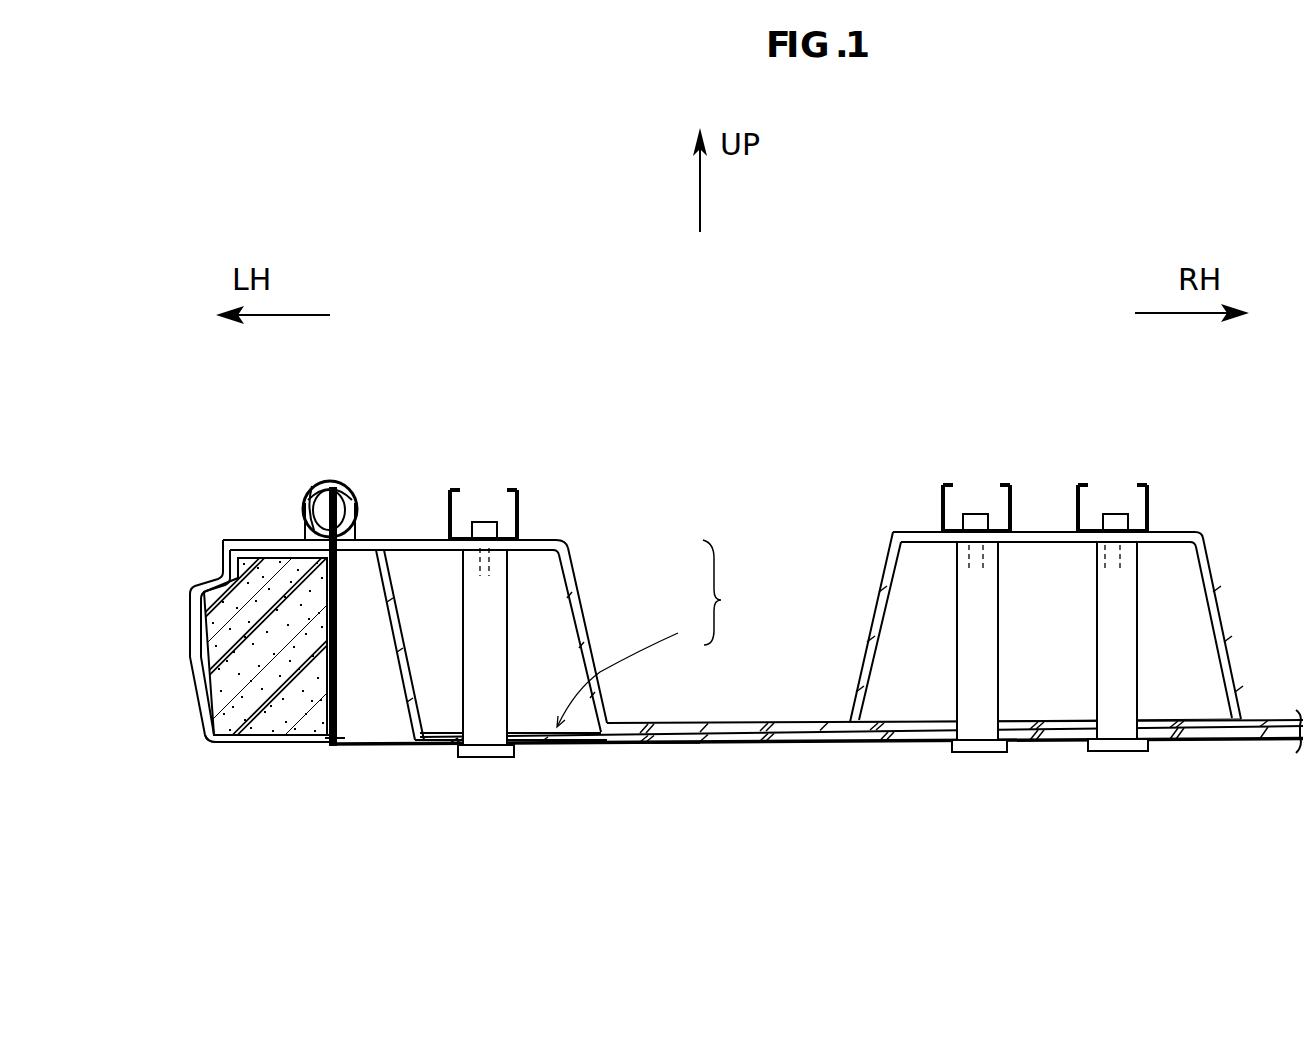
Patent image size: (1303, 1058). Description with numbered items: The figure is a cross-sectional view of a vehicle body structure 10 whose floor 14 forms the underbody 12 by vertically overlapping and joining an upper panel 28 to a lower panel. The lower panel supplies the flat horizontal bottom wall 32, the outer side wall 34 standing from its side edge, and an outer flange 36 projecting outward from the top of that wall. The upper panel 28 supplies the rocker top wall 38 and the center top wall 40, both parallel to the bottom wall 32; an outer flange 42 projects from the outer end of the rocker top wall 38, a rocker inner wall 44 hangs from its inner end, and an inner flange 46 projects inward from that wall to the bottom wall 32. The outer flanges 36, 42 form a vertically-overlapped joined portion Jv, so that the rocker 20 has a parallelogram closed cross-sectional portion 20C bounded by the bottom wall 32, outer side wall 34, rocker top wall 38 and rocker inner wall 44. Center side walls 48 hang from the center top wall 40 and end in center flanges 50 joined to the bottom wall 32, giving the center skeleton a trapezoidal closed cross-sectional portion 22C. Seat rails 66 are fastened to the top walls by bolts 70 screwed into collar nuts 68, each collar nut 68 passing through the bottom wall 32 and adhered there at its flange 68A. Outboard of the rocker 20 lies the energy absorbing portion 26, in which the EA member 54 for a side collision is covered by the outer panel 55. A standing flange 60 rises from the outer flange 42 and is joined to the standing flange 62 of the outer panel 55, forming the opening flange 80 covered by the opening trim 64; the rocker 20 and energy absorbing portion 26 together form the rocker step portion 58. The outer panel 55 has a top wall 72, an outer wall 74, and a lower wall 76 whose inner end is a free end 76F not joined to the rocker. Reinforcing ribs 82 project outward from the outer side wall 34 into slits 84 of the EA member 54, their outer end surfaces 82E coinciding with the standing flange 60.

The vehicle body structure 10 is at (823, 420).
The underbody 12 is at (682, 633).
The floor 14 is at (682, 633).
The rocker 20 is at (763, 635).
The closed cross-sectional portion 20C is at (460, 608).
The closed cross-sectional portion 22C is at (986, 673).
The energy absorbing portion 26 is at (210, 760).
The upper panel 28 is at (600, 612).
The bottom wall 32 is at (592, 746).
The outer side wall 34 is at (417, 746).
The outer flange 36 is at (357, 562).
The rocker top wall 38 is at (548, 538).
The center top wall 40 is at (1045, 544).
The outer flange 42 is at (452, 478).
The rocker inner wall 44 is at (602, 688).
The inner flange 46 is at (653, 744).
The center side wall 48 is at (858, 680).
The center flange 50 is at (800, 742).
The EA member for a side collision 54 is at (277, 738).
The outer panel 55 is at (222, 537).
The rocker step portion 58 is at (339, 596).
The standing flange 60 is at (340, 482).
The standing flange 62 is at (323, 483).
The opening trim 64 is at (305, 498).
The seat rail 66 is at (530, 477).
The collar nut 68 is at (508, 701).
The flange 68A is at (487, 759).
The bolt 70 is at (488, 521).
The top wall 72 is at (262, 539).
The outer wall 74 is at (190, 647).
The lower wall 76 is at (267, 720).
The free end 76F is at (248, 740).
The opening flange 80 is at (345, 448).
The reinforcing rib 82 is at (365, 682).
The outer end surface 82E is at (314, 740).
The slit 84 is at (318, 740).
The vertically-overlapped joined portion Jv is at (464, 466).